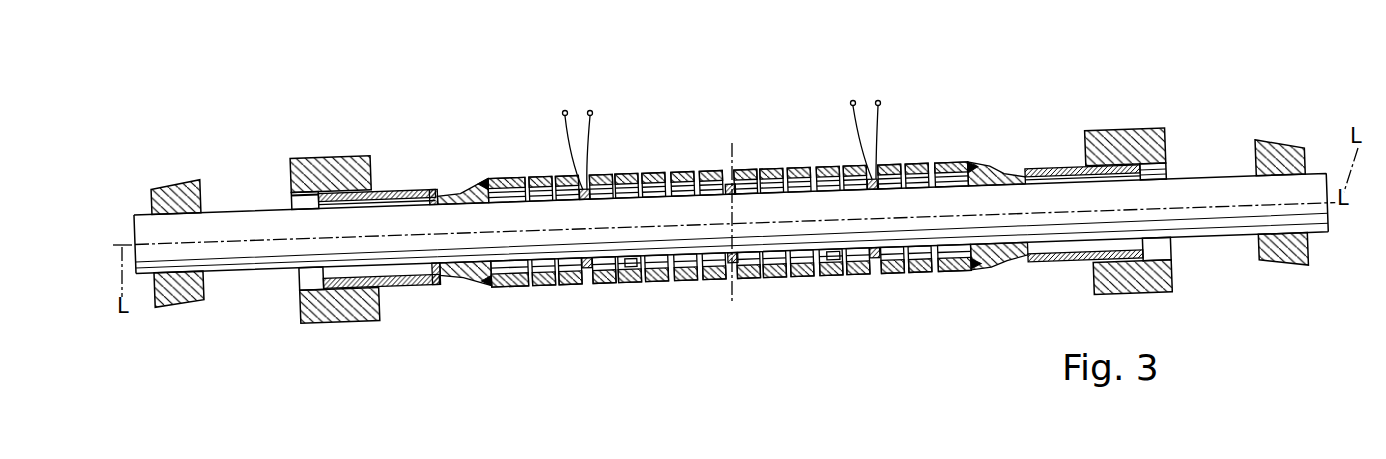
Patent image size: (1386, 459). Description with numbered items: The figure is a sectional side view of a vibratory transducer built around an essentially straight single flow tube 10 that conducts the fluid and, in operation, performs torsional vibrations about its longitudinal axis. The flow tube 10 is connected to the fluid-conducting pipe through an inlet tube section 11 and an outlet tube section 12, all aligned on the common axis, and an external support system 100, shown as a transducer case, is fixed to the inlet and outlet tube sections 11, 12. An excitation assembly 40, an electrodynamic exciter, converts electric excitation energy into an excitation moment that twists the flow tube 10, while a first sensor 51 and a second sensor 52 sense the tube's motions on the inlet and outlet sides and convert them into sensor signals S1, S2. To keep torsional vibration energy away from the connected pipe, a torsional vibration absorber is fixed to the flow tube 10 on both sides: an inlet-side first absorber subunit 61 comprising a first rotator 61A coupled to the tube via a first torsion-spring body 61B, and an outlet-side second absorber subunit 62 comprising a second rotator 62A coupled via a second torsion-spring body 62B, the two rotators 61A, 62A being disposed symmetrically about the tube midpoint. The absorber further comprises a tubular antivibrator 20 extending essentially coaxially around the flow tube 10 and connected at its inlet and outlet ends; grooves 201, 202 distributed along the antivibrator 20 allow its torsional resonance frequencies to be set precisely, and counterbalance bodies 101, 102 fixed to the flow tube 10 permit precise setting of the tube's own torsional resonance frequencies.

The flow tube 10 is at (512, 217).
The inlet tube section 11 is at (245, 253).
The outlet tube section 12 is at (1218, 218).
The external support system 100 is at (170, 169).
The first absorber subunit 61 is at (281, 145).
The first rotator 61A is at (333, 318).
The first torsion-spring body 61B is at (420, 192).
The second absorber subunit 62 is at (1166, 112).
The second rotator 62A is at (1100, 279).
The second torsion-spring body 62B is at (1062, 168).
The antivibrator 20 is at (728, 141).
The groove 201 is at (627, 160).
The groove 202 is at (784, 160).
The first sensor 51 is at (583, 289).
The second sensor 52 is at (884, 288).
The counterbalance body 101 is at (631, 265).
The counterbalance body 102 is at (833, 265).
The excitation assembly 40 is at (745, 290).
The first sensor signal S1 is at (547, 70).
The second sensor signal S2 is at (887, 60).